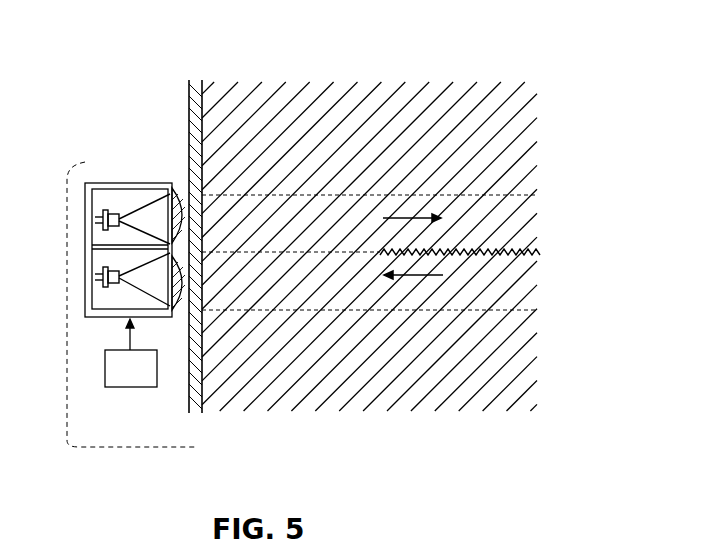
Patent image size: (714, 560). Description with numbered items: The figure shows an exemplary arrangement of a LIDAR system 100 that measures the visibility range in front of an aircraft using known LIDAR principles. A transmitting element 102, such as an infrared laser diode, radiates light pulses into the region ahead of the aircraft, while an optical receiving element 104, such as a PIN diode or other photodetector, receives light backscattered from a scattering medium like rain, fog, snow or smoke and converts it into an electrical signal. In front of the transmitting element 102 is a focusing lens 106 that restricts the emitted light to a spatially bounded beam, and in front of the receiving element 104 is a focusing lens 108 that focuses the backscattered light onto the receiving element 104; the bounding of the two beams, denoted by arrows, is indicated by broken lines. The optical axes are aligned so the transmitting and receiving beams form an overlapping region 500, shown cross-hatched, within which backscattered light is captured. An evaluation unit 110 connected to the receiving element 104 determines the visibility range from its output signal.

The LIDAR system 100 is at (64, 254).
The transmitting element 102 is at (115, 208).
The optical receiving element 104 is at (97, 318).
The focusing lens 106 is at (176, 195).
The focusing lens 108 is at (178, 300).
The evaluation unit 110 is at (138, 384).
The overlapping region 500 is at (522, 263).